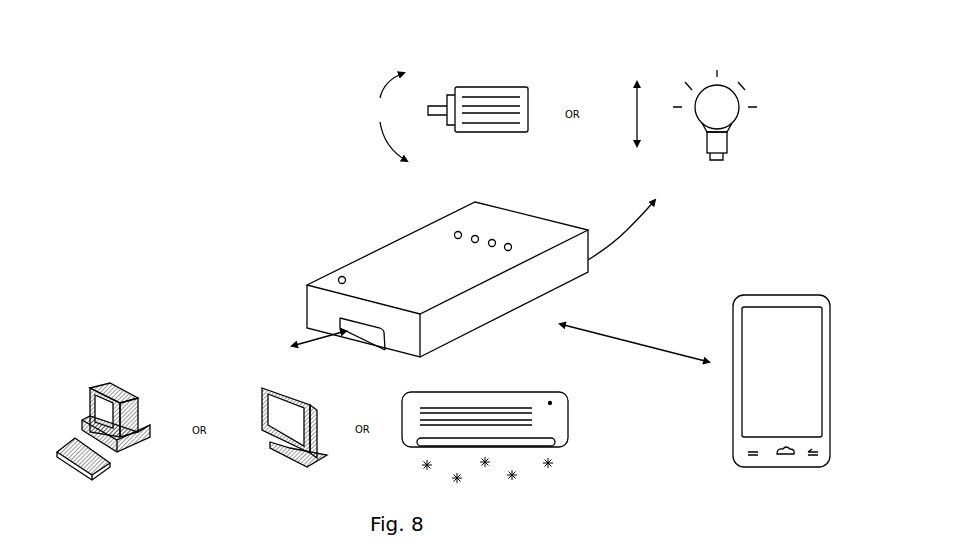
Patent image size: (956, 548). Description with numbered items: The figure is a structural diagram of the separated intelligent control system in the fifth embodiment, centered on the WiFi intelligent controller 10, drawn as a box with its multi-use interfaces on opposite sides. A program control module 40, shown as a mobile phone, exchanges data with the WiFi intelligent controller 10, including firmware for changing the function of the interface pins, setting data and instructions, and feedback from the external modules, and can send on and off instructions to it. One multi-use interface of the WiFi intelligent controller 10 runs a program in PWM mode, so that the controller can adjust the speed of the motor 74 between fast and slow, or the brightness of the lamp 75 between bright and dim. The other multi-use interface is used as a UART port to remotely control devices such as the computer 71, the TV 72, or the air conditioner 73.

The WiFi intelligent controller 10 is at (538, 277).
The program control module 40 is at (773, 420).
The computer 71 is at (100, 383).
The TV 72 is at (263, 400).
The air conditioner 73 is at (535, 425).
The motor 74 is at (490, 95).
The lamp 75 is at (713, 107).